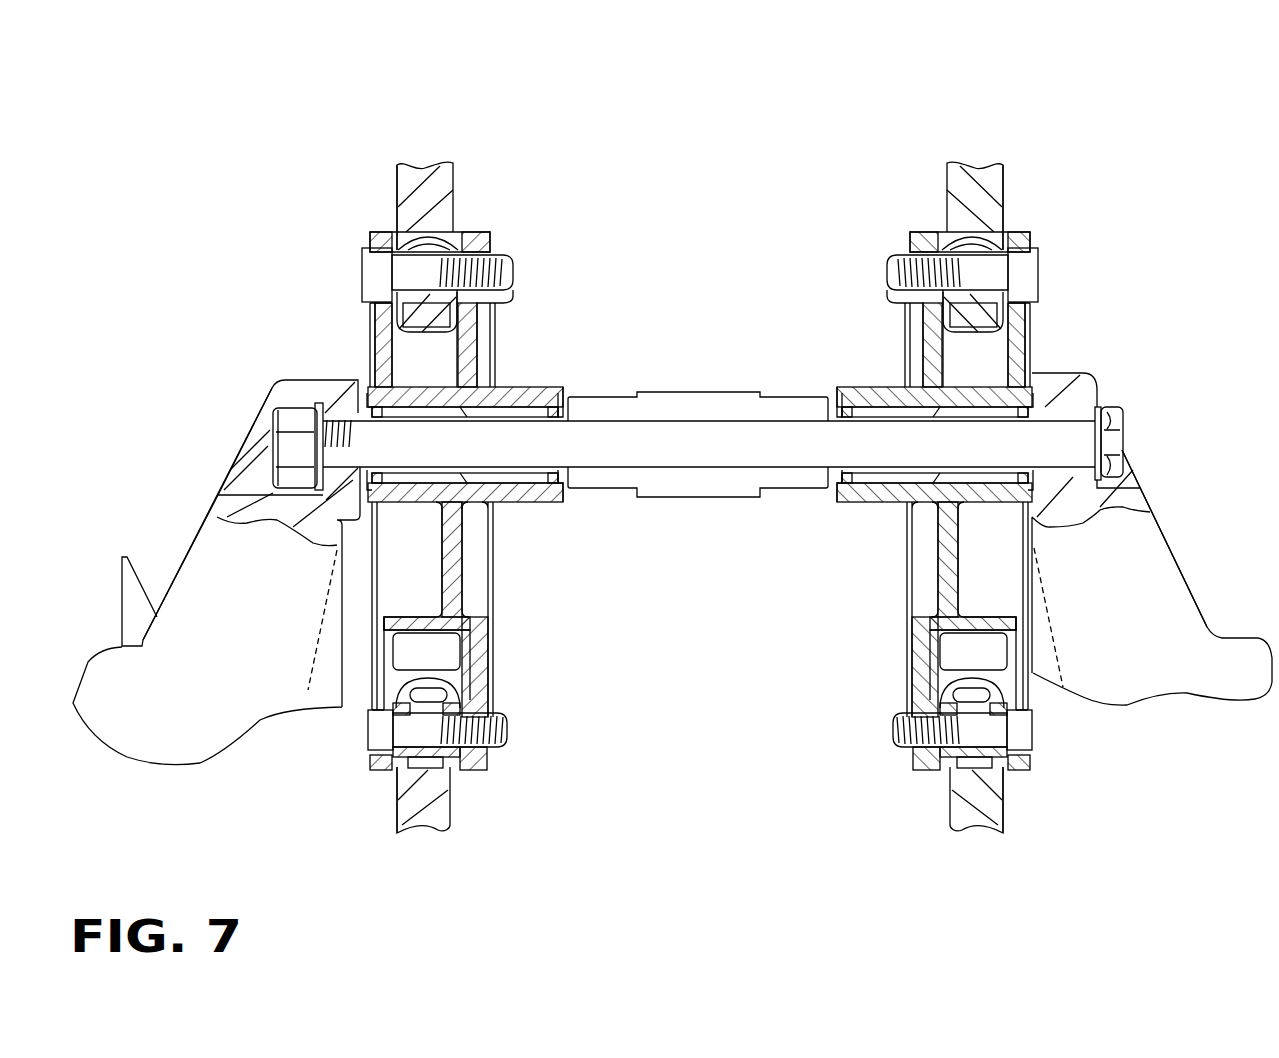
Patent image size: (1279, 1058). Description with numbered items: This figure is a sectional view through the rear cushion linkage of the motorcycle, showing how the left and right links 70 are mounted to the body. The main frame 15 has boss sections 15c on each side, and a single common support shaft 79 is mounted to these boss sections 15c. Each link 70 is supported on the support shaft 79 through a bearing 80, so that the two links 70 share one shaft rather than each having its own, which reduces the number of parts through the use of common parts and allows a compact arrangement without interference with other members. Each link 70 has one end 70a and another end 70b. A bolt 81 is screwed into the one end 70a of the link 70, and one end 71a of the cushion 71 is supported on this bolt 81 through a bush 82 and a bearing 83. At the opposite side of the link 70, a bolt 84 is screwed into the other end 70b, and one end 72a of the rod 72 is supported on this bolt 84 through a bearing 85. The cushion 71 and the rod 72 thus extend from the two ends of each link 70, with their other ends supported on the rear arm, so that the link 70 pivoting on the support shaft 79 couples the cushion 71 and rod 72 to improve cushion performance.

The main frame 15 is at (102, 591).
The boss sections 15c is at (200, 547).
The link 70 is at (362, 312).
The one end of the link 70a is at (477, 236).
The other end of the link 70b is at (383, 702).
The cushion 71 is at (426, 160).
The one end of the cushion 71a is at (397, 218).
The rod 72 is at (428, 851).
The one end of the rod 72a is at (397, 795).
The support shaft 79 is at (692, 447).
The bearing 80 is at (527, 405).
The bolt 81 is at (513, 273).
The bush 82 is at (380, 250).
The bearing 83 is at (456, 232).
The bolt 84 is at (507, 735).
The bearing 85 is at (465, 688).